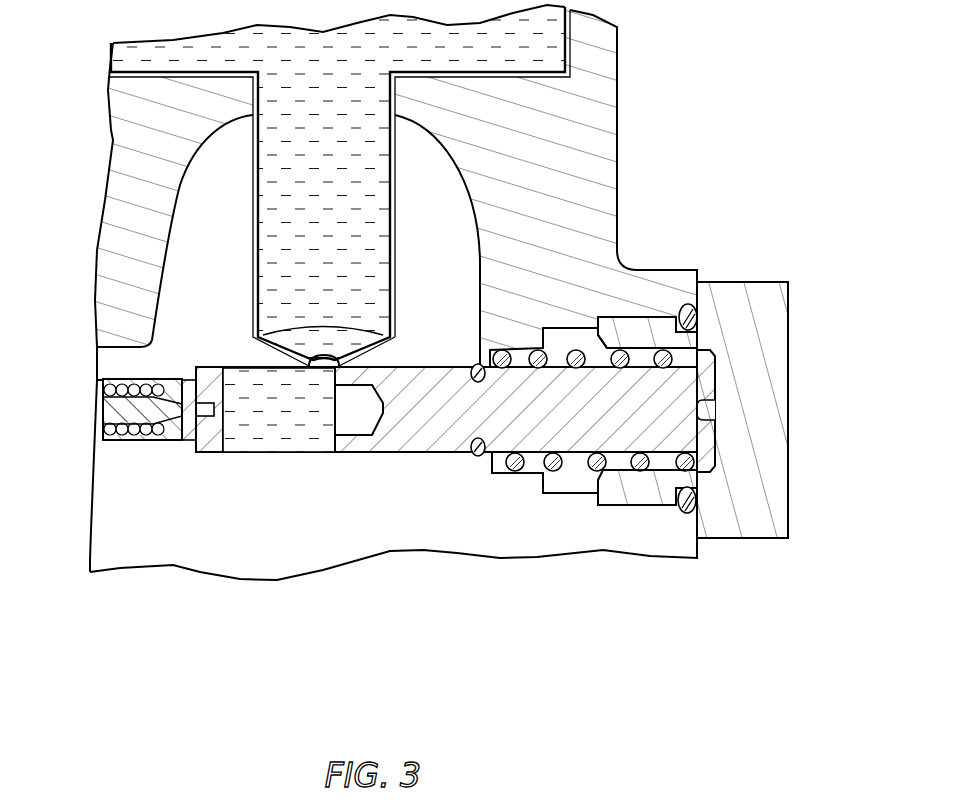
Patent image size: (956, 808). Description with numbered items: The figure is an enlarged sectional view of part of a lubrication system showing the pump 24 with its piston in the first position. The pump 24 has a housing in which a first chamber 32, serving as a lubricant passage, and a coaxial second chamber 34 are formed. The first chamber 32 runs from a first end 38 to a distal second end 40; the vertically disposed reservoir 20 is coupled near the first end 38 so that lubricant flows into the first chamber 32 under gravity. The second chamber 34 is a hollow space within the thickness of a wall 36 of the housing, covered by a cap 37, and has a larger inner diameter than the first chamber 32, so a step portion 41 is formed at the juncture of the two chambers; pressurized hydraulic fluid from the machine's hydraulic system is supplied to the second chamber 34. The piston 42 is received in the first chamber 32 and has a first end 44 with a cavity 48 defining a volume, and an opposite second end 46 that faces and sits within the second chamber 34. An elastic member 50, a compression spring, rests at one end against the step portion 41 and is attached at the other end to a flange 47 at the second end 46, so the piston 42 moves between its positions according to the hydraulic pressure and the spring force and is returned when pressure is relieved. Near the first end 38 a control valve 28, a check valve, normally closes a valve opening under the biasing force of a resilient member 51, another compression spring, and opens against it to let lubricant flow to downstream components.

The reservoir 20 is at (253, 221).
The resilient member 51 is at (103, 380).
The control valve 28 is at (173, 418).
The first end 38 is at (223, 437).
The first chamber 32 is at (260, 437).
The first end 44 is at (347, 440).
The cavity 48 is at (375, 433).
The piston 42 is at (418, 455).
The second end 40 is at (495, 463).
The pump 24 is at (560, 533).
The step portion 41 is at (490, 345).
The second chamber 34 is at (650, 355).
The wall 36 is at (665, 468).
The elastic member 50 is at (598, 472).
The flange 47 is at (710, 462).
The second end 46 is at (717, 384).
The cap 37 is at (765, 464).